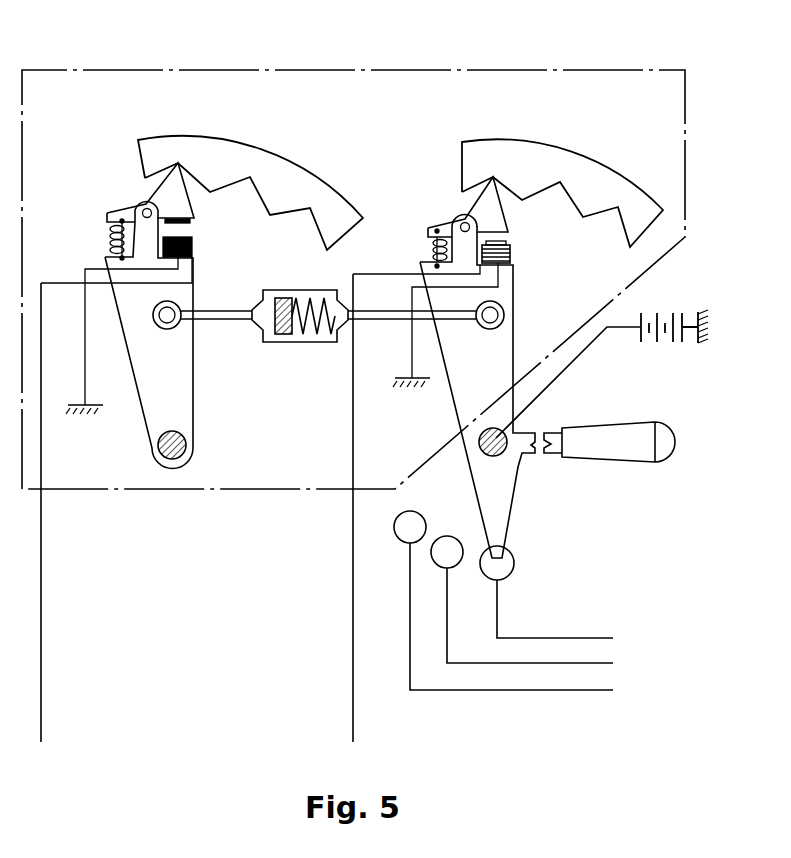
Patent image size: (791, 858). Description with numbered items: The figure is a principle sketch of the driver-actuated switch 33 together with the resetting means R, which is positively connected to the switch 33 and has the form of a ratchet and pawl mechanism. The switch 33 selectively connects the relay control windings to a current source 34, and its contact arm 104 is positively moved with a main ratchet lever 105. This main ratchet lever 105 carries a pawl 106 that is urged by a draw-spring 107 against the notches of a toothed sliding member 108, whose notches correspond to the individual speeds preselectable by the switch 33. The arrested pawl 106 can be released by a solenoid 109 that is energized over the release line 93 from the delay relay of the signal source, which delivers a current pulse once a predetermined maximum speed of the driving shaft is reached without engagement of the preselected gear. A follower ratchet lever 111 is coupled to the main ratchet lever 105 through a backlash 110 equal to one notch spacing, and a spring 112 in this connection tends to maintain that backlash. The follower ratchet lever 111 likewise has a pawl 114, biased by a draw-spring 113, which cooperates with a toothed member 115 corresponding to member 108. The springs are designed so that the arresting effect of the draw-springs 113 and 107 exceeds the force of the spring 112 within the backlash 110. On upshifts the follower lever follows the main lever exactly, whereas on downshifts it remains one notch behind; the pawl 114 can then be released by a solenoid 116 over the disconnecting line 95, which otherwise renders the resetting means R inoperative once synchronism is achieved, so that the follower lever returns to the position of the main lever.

The resetting means R is at (388, 70).
The toothed member 115 is at (243, 150).
The pawl 114 is at (168, 192).
The draw-spring 113 is at (110, 240).
The solenoid 116 is at (194, 246).
The follower ratchet lever 111 is at (180, 390).
The spring 112 is at (310, 300).
The backlash 110 is at (306, 340).
The notched sliding member 108 is at (557, 167).
The pawl 106 is at (482, 202).
The draw-spring 107 is at (430, 246).
The solenoid 109 is at (511, 253).
The main ratchet lever 105 is at (462, 398).
The current source 34 is at (660, 345).
The contact arm 104 is at (550, 453).
The switch 33 is at (455, 525).
The disconnecting line 95 is at (41, 650).
The release line 93 is at (353, 650).